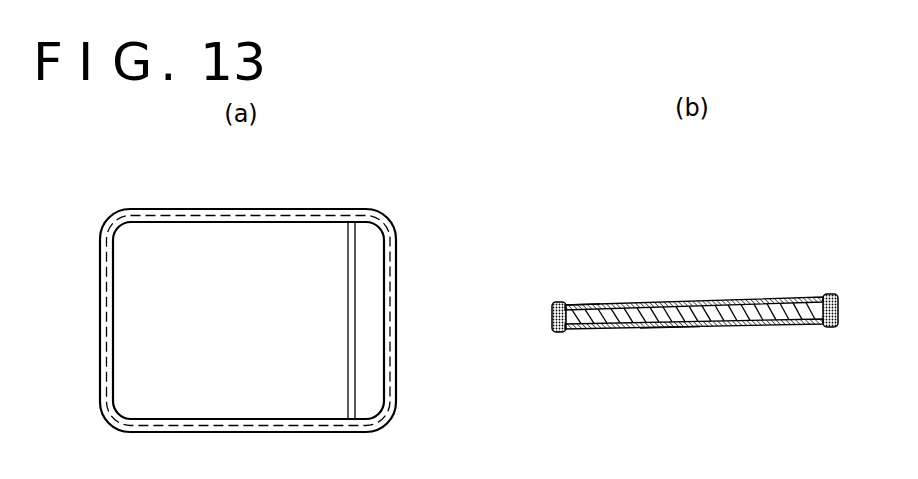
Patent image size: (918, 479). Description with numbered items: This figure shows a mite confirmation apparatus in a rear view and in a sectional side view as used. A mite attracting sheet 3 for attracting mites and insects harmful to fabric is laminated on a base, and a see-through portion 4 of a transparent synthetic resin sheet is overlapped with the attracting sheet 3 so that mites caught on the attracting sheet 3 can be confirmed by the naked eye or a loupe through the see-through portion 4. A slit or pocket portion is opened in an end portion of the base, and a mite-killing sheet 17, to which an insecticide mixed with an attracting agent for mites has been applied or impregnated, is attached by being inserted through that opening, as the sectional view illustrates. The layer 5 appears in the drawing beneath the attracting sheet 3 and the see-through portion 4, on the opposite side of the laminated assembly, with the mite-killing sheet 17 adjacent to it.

The mite attracting sheet 3 is at (637, 312).
The see-through portion 4 is at (690, 303).
The lower surface layer 5 is at (627, 328).
The mite-killing sheet 17 is at (673, 325).